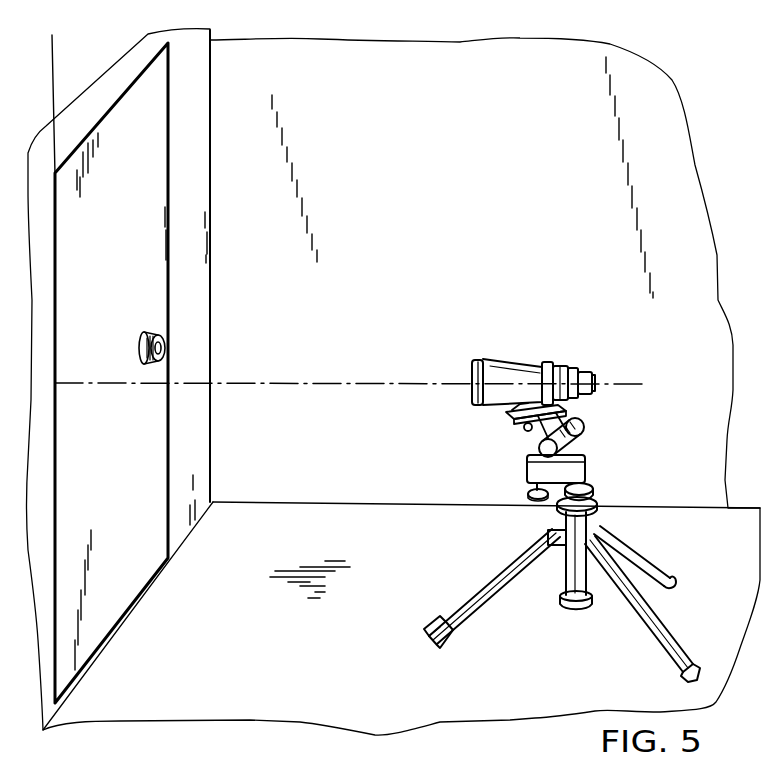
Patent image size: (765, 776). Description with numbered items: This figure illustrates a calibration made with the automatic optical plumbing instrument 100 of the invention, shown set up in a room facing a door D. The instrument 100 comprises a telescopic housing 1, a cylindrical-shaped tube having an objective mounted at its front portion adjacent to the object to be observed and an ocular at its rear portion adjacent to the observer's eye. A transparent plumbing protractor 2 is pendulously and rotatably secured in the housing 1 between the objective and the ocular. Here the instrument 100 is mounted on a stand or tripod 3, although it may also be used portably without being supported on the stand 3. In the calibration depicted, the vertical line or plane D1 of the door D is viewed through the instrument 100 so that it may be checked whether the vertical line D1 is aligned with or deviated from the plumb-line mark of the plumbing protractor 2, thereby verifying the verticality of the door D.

The automatic optical plumbing instrument 100 is at (510, 313).
The telescopic housing 1 is at (522, 353).
The transparent plumbing protractor 2 is at (540, 368).
The stand or tripod 3 is at (503, 423).
The door D is at (148, 118).
The vertical line of the door D1 is at (53, 70).